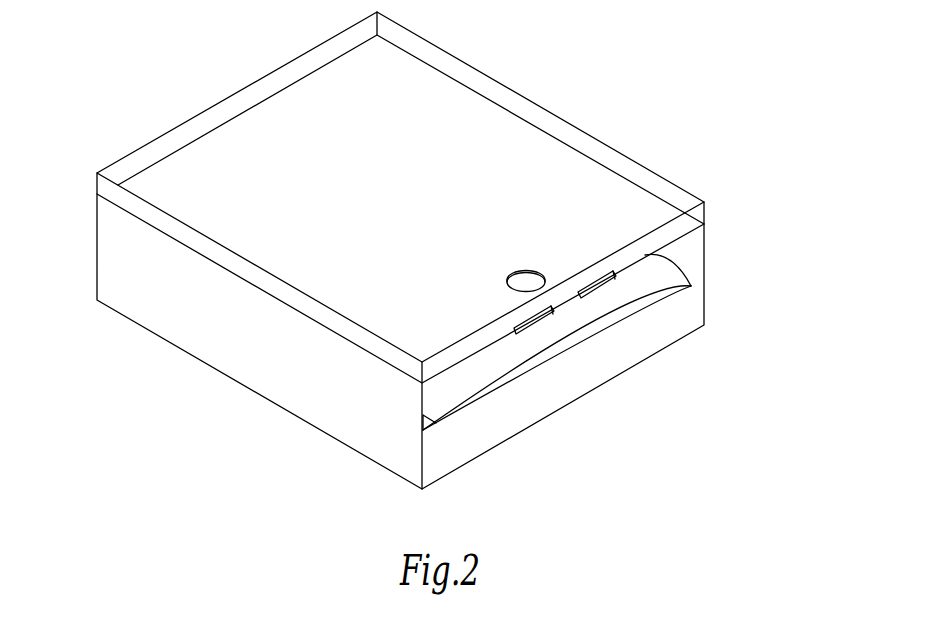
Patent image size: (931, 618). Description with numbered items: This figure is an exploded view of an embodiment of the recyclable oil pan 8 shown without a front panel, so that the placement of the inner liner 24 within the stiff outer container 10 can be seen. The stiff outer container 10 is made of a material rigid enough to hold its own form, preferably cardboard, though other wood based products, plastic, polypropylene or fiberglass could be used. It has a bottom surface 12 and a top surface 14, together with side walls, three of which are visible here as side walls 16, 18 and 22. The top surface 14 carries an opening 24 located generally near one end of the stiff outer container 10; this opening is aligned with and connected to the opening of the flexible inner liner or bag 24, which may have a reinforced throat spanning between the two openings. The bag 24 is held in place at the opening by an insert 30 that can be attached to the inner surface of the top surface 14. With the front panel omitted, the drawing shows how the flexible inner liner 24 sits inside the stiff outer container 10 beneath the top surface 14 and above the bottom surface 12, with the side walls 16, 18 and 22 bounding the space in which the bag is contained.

The recyclable oil pan 8 is at (103, 83).
The stiff outer container 10 is at (598, 55).
The bottom surface 12 is at (563, 408).
The top surface 14 is at (442, 113).
The side wall 16 is at (223, 352).
The side wall 18 is at (584, 141).
The side wall 22 is at (177, 137).
The inner liner or bag 24 is at (517, 275).
The insert 30 is at (610, 283).